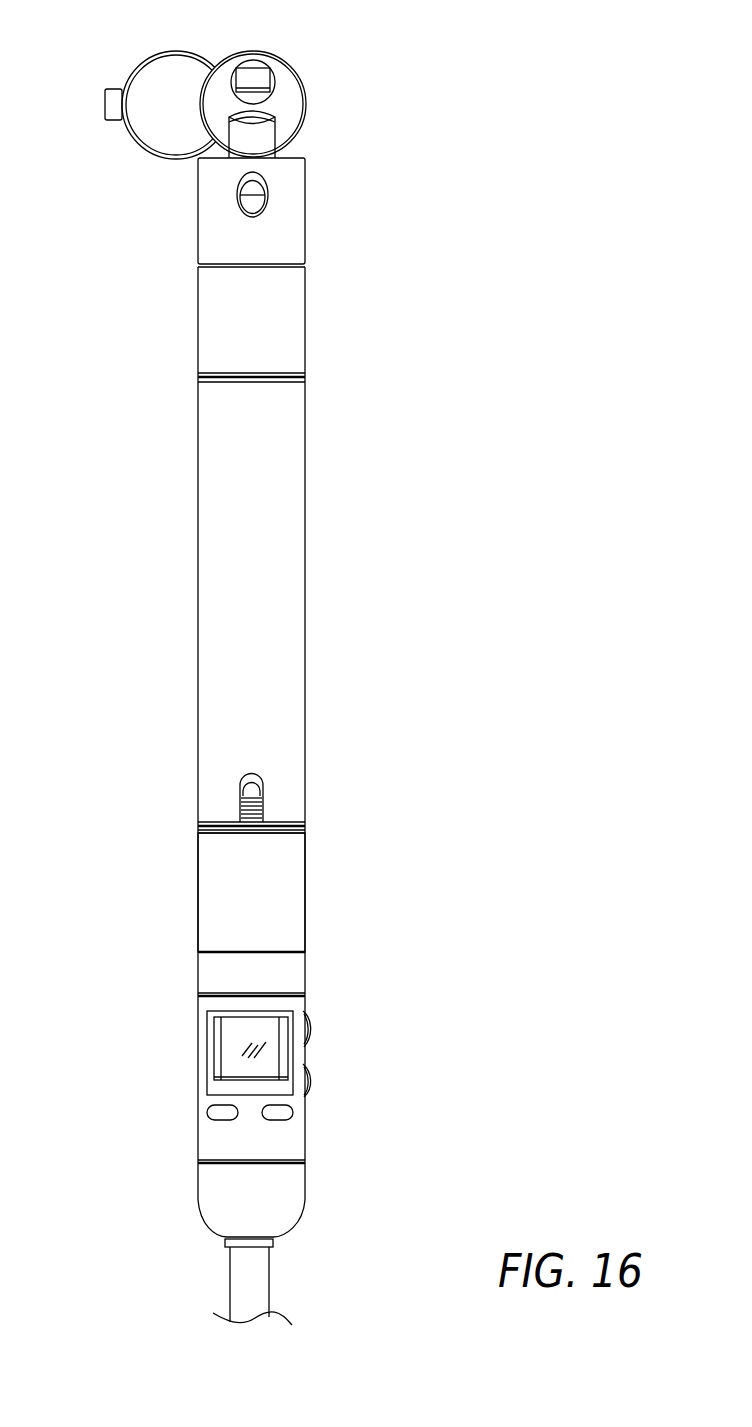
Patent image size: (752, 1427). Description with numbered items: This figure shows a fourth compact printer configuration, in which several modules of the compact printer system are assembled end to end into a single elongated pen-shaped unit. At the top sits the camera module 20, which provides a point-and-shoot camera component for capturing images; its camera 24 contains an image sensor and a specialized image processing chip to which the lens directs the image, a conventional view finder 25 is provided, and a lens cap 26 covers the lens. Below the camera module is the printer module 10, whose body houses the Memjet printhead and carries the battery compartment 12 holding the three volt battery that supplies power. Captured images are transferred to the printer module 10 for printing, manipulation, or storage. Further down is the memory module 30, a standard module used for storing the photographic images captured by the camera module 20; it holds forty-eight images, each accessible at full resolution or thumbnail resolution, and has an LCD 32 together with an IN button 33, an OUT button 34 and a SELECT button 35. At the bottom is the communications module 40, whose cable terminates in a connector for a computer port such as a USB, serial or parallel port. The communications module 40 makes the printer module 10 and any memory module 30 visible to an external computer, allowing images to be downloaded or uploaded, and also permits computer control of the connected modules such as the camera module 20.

The printer module 10 is at (305, 647).
The battery compartment 12 is at (305, 872).
The camera module 20 is at (307, 225).
The camera 24 is at (305, 110).
The view finder 25 is at (253, 77).
The lens cap 26 is at (133, 78).
The memory module 30 is at (302, 1072).
The LCD 32 is at (233, 1053).
The IN button 33 is at (215, 1112).
The OUT button 34 is at (285, 1112).
The SELECT button 35 is at (303, 1013).
The communications module 40 is at (298, 1217).